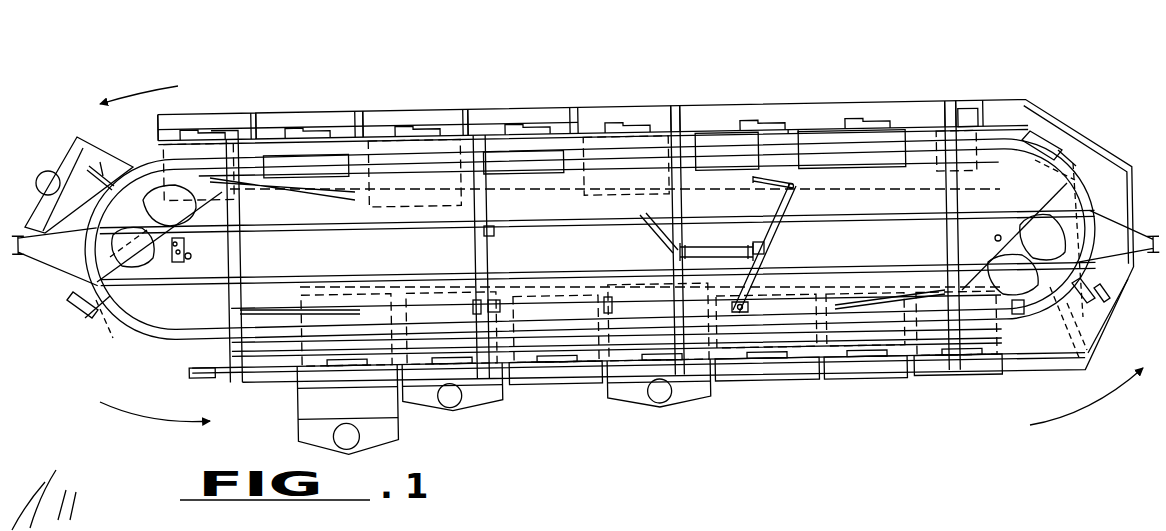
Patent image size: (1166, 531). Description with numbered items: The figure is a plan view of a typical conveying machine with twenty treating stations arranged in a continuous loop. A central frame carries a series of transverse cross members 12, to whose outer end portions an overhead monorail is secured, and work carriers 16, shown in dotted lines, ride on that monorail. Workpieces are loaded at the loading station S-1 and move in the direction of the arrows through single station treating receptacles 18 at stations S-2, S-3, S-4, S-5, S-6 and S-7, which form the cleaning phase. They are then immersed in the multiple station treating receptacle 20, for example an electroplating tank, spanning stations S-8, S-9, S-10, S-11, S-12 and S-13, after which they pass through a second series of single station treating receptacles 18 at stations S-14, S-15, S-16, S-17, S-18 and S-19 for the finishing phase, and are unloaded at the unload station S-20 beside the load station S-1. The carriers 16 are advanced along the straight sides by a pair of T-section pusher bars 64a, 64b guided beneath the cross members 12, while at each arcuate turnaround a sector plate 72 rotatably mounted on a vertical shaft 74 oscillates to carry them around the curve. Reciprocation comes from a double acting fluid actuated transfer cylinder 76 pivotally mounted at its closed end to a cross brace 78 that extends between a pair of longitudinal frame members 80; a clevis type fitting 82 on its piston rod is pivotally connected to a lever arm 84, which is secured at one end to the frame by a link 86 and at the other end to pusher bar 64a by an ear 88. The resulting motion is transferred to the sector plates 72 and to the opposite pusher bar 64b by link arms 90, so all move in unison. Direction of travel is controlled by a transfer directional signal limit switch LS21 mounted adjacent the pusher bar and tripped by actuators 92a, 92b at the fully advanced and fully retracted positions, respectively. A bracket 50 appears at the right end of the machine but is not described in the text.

The transverse cross members 12 is at (243, 258).
The work carriers 16 is at (178, 141).
The single station treating receptacles 18 is at (60, 165).
The multiple station treating receptacle 20 is at (1073, 356).
The bracket 50 is at (1110, 297).
The pusher bar 64a is at (510, 322).
The pusher bar 64b is at (530, 189).
The sector plate 72 is at (186, 246).
The vertical shaft 74 is at (188, 254).
The transfer cylinder 76 is at (718, 228).
The cross brace 78 is at (670, 233).
The longitudinal frame members 80 is at (530, 270).
The clevis type fitting 82 is at (770, 250).
The lever arm 84 is at (773, 232).
The link 86 is at (793, 183).
The ear 88 is at (752, 305).
The link arms 90 is at (293, 193).
The actuator 92a is at (475, 312).
The actuator 92b is at (617, 312).
The transfer directional signal limit switch LS21 is at (530, 281).
The loading station S-1 is at (180, 345).
The treating station S-2 is at (367, 393).
The treating station S-3 is at (462, 413).
The treating station S-4 is at (548, 374).
The treating station S-5 is at (668, 403).
The treating station S-6 is at (760, 372).
The treating station S-7 is at (868, 362).
The treating station S-8 is at (972, 357).
The treating station S-9 is at (1110, 300).
The treating station S-10 is at (1068, 135).
The treating station S-11 is at (943, 104).
The treating station S-12 is at (848, 104).
The treating station S-13 is at (733, 104).
The treating station S-14 is at (632, 104).
The treating station S-15 is at (520, 106).
The treating station S-16 is at (416, 112).
The treating station S-17 is at (311, 112).
The treating station S-18 is at (206, 114).
The treating station S-19 is at (72, 140).
The unload station S-20 is at (72, 318).